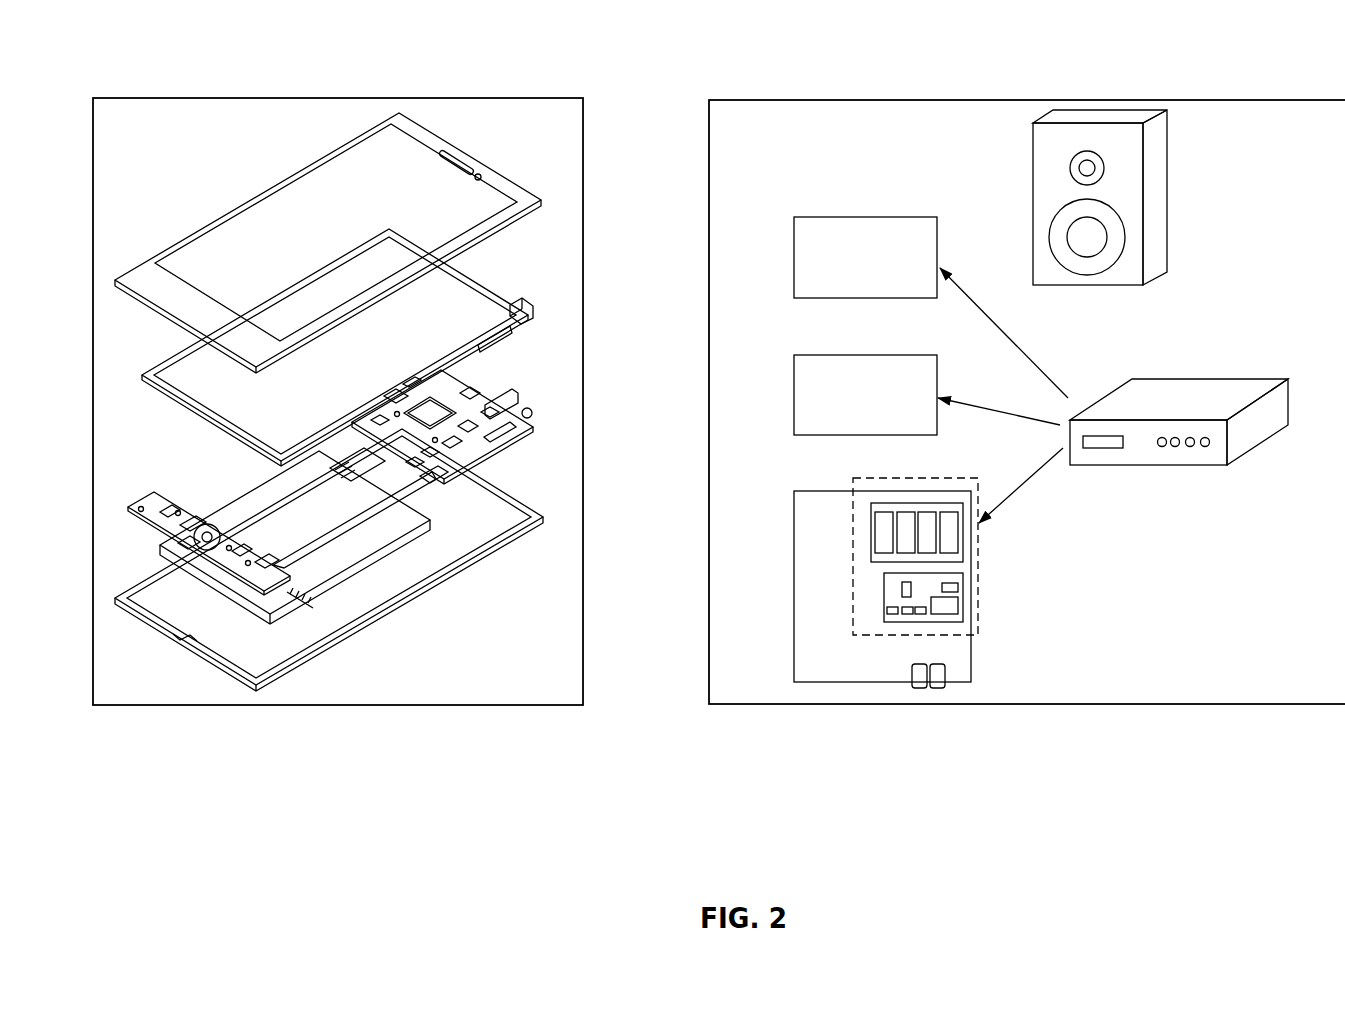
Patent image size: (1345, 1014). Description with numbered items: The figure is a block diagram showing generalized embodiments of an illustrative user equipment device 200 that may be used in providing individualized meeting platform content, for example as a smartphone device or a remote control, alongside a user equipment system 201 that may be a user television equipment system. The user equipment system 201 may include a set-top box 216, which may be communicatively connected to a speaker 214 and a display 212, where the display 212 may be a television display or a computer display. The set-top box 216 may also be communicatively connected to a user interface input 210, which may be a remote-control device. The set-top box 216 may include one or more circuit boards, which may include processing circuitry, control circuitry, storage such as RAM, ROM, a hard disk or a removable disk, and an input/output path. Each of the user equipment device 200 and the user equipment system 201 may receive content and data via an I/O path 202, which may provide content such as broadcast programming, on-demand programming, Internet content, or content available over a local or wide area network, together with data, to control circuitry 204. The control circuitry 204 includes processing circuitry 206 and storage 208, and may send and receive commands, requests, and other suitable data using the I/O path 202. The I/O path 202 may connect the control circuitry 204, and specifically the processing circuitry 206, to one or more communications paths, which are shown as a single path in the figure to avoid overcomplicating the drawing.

The user equipment device 200 is at (187, 50).
The user equipment system 201 is at (1232, 62).
The I/O path 202 is at (197, 553).
The control circuitry 204 is at (297, 545).
The processing circuitry 206 is at (880, 580).
The storage 208 is at (868, 528).
The user interface input 210 is at (790, 255).
The display 212 is at (785, 360).
The speaker 214 is at (1030, 202).
The set-top box 216 is at (1172, 378).